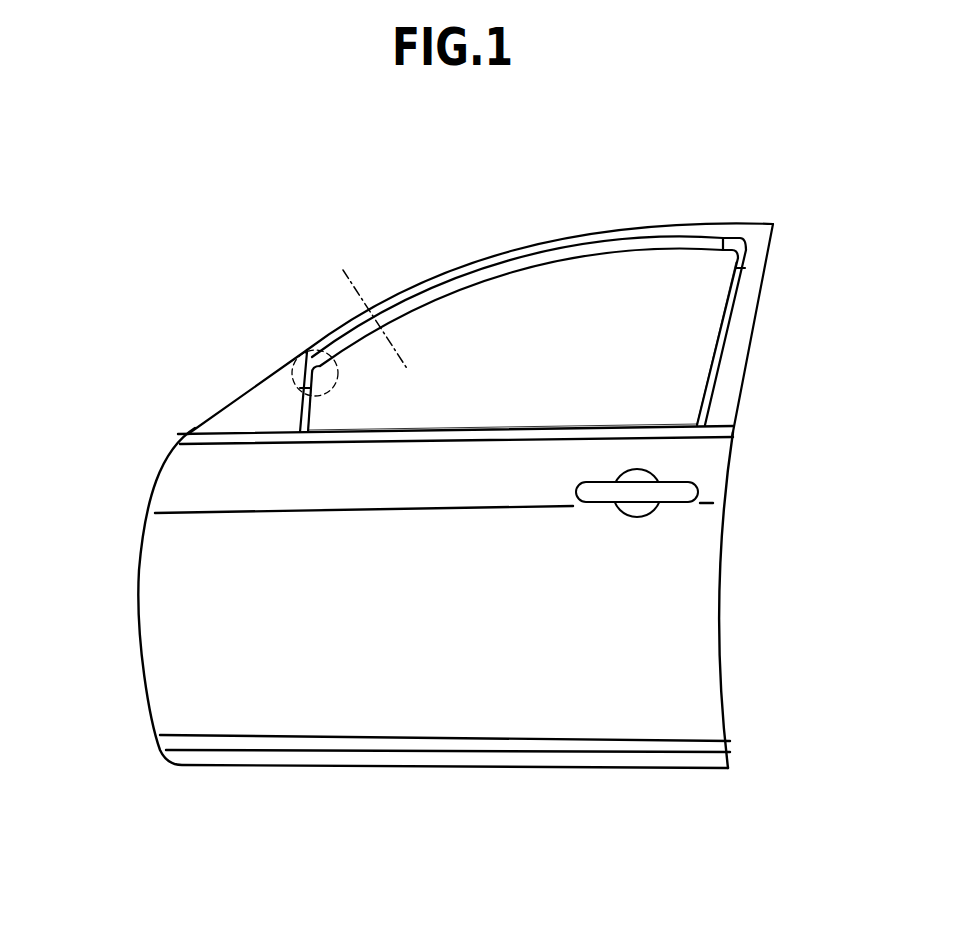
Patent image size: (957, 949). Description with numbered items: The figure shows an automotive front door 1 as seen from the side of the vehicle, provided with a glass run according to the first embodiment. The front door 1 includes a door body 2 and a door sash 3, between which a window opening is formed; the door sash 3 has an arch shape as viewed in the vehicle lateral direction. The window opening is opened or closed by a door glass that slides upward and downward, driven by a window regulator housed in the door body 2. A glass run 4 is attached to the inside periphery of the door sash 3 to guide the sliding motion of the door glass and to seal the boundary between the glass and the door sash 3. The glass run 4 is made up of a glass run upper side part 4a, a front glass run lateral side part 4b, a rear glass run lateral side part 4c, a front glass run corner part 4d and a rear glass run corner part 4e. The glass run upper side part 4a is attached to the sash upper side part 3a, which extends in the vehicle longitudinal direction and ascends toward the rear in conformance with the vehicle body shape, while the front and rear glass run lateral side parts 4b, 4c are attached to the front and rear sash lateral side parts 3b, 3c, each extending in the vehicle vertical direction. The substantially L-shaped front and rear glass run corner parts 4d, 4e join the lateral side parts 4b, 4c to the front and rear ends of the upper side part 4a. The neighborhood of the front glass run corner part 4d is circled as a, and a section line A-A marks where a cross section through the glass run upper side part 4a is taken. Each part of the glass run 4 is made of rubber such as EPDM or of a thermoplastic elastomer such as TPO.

The automotive front door 1 is at (128, 578).
The door body 2 is at (693, 608).
The door sash 3 is at (513, 302).
The sash upper side part 3a is at (539, 246).
The front sash lateral side part 3b is at (298, 400).
The rear sash lateral side part 3c is at (750, 298).
The glass run 4 is at (493, 298).
The glass run upper side part 4a is at (594, 251).
The front glass run lateral side part 4b is at (300, 418).
The rear glass run lateral side part 4c is at (728, 320).
The front glass run corner part 4d is at (309, 356).
The rear glass run corner part 4e is at (743, 245).
The circled neighborhood of front glass run corner part a is at (302, 354).
The section line A- A is at (350, 278).